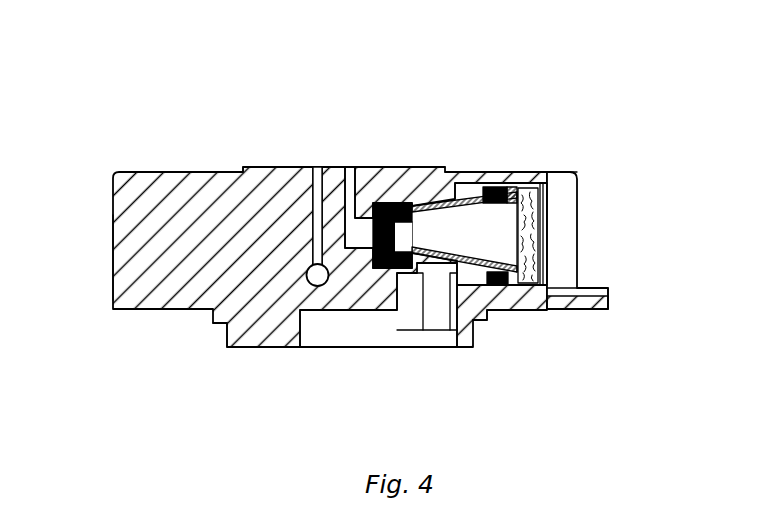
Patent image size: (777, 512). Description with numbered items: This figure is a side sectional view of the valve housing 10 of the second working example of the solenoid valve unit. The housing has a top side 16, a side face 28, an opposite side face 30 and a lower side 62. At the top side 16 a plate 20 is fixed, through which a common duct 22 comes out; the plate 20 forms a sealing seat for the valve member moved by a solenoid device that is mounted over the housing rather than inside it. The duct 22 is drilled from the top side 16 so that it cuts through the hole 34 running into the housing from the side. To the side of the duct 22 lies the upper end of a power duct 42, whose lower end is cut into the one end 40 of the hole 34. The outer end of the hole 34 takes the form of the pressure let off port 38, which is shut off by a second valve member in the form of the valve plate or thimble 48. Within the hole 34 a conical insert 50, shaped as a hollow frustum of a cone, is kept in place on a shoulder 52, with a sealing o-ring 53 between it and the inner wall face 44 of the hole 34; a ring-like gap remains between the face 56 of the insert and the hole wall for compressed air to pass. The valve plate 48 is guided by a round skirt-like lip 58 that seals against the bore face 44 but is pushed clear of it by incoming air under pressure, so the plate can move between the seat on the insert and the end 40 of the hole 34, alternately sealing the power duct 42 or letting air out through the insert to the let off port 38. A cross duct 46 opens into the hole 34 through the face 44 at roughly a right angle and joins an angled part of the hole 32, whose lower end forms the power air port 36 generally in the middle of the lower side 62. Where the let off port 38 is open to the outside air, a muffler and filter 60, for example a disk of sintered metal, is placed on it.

The valve housing 10 is at (540, 153).
The top side 16 is at (153, 163).
The plate 20 is at (255, 167).
The duct 22 is at (313, 170).
The side face 28 is at (113, 221).
The side face 30 is at (577, 197).
The hole 32 is at (315, 335).
The hole 34 is at (528, 215).
The power air port 36 is at (345, 357).
The pressure let off port 38 is at (570, 264).
The end of hole 40 is at (378, 206).
The power duct 42 is at (359, 188).
The inner wall face 44 is at (447, 201).
The cross duct 46 is at (474, 292).
The valve plate 48 is at (388, 272).
The conical insert 50 is at (478, 186).
The shoulder 52 is at (485, 313).
The sealing o-ring 53 is at (535, 168).
The face of conical insert 56 is at (440, 293).
The skirt-like lip 58 is at (392, 203).
The muffler and filter 60 is at (547, 293).
The lower side 62 is at (240, 355).